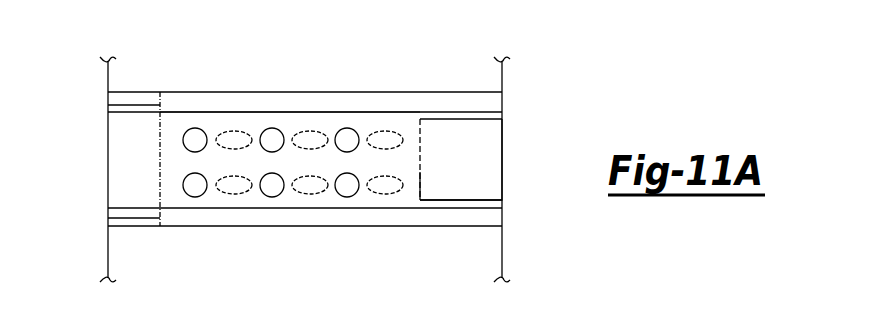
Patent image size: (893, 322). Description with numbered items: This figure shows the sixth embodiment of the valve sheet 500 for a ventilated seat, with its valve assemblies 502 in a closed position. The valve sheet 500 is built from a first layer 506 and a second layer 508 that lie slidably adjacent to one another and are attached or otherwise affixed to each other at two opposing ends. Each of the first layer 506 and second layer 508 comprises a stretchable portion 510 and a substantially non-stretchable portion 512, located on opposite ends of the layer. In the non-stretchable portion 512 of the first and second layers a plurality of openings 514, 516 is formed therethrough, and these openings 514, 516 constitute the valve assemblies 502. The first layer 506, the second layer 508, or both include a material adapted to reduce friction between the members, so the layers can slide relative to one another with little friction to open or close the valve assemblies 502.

The valve sheet 500 is at (68, 95).
The valve assemblies 502 is at (258, 116).
The first layer 506 is at (370, 128).
The second layer 508 is at (487, 165).
The stretchable portion 510 is at (140, 95).
The substantially non-stretchable portion 512 is at (457, 158).
The openings 514 is at (192, 190).
The openings 516 is at (302, 190).